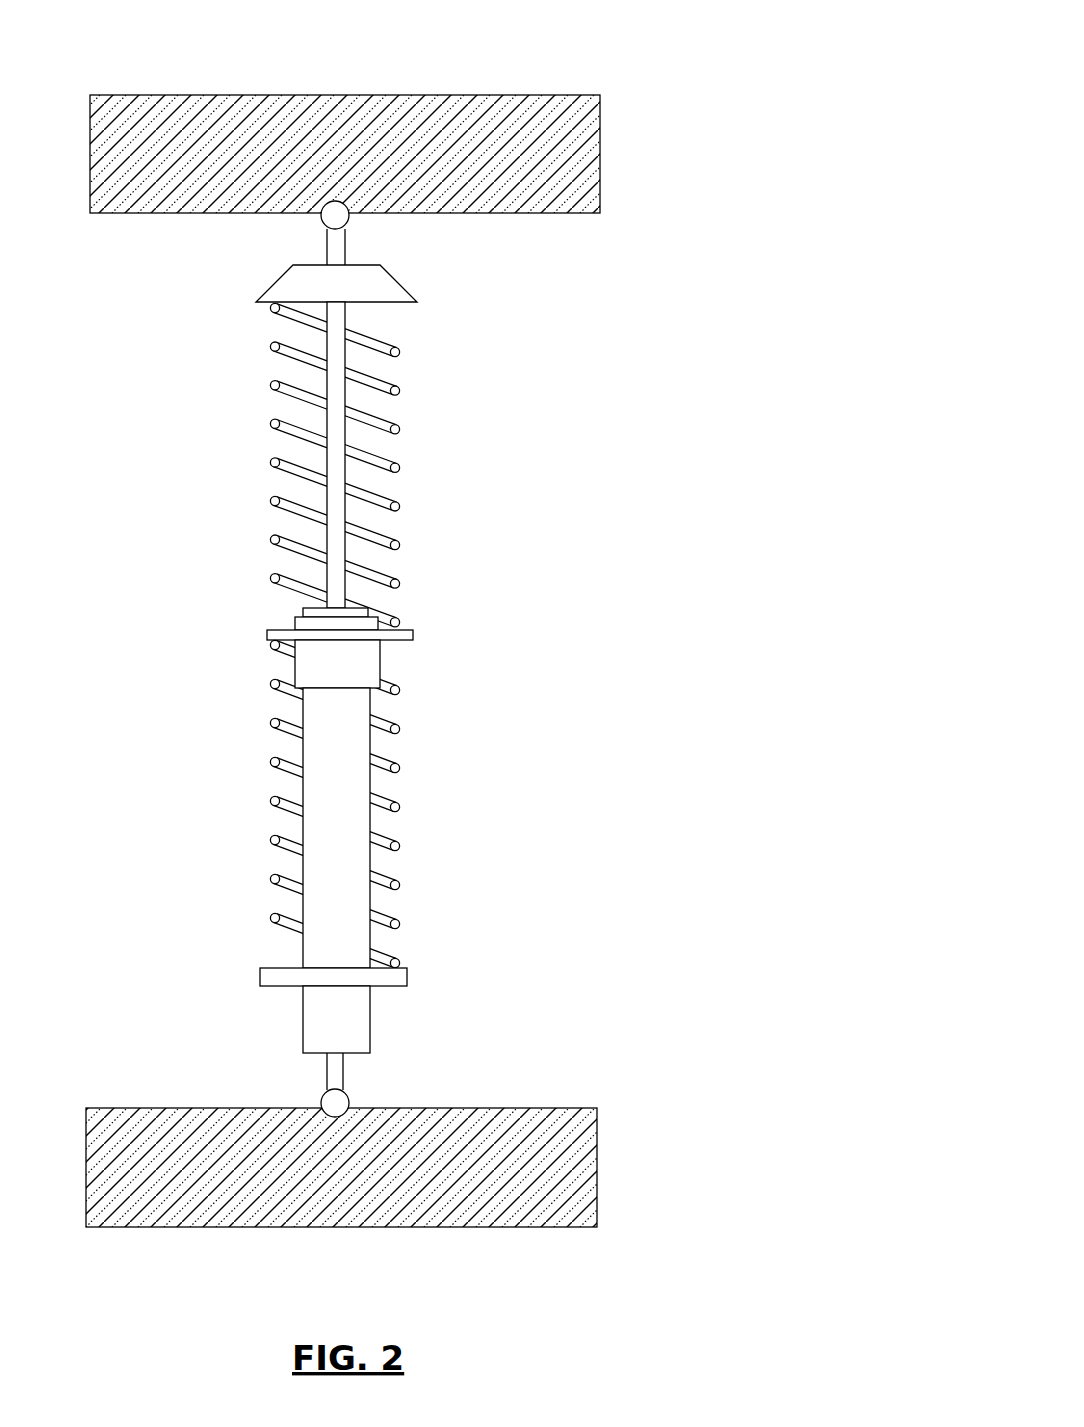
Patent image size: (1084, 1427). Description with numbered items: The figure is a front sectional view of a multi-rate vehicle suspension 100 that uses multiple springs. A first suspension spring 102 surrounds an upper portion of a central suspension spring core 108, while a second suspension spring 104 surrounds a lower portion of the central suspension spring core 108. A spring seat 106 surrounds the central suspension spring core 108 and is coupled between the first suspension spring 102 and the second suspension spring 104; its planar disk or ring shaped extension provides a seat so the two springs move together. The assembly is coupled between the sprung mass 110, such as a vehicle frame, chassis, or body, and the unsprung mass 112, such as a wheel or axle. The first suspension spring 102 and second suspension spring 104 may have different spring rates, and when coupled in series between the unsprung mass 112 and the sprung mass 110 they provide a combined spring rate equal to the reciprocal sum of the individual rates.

The multi-rate vehicle suspension 100 is at (669, 33).
The first suspension spring 102 is at (436, 425).
The second suspension spring 104 is at (436, 803).
The spring seat 106 is at (267, 632).
The central suspension spring core 108 is at (302, 863).
The sprung mass 110 is at (603, 160).
The unsprung mass 112 is at (598, 1166).